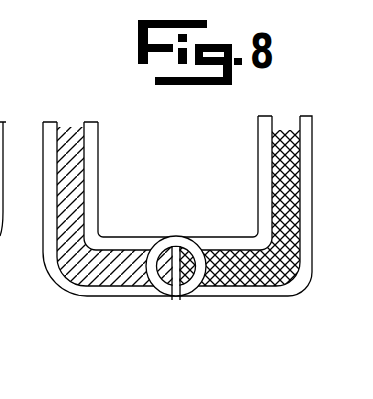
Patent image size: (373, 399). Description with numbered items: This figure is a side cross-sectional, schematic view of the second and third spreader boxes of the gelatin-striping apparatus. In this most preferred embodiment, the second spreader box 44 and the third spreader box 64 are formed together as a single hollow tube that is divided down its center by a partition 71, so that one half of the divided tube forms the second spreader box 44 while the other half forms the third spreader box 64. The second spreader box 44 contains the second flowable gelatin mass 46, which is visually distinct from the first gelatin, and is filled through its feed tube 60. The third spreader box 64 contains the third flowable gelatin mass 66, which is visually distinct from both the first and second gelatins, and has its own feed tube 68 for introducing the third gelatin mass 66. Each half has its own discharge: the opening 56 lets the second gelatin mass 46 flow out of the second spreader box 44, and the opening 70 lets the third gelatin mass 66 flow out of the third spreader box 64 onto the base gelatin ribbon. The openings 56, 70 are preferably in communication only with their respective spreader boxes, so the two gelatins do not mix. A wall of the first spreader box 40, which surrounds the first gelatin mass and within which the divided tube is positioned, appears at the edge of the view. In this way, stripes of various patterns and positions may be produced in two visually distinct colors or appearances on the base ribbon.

The first spreader box 40 is at (3, 122).
The second spreader box 44 is at (78, 282).
The second flowable gelatin mass 46 is at (0, 152).
The opening 56 is at (172, 298).
The feed tube 60 is at (40, 126).
The third spreader box 64 is at (291, 281).
The third flowable gelatin mass 66 is at (293, 236).
The feed tube 68 is at (303, 115).
The opening 70 is at (181, 297).
The partition 71 is at (173, 247).